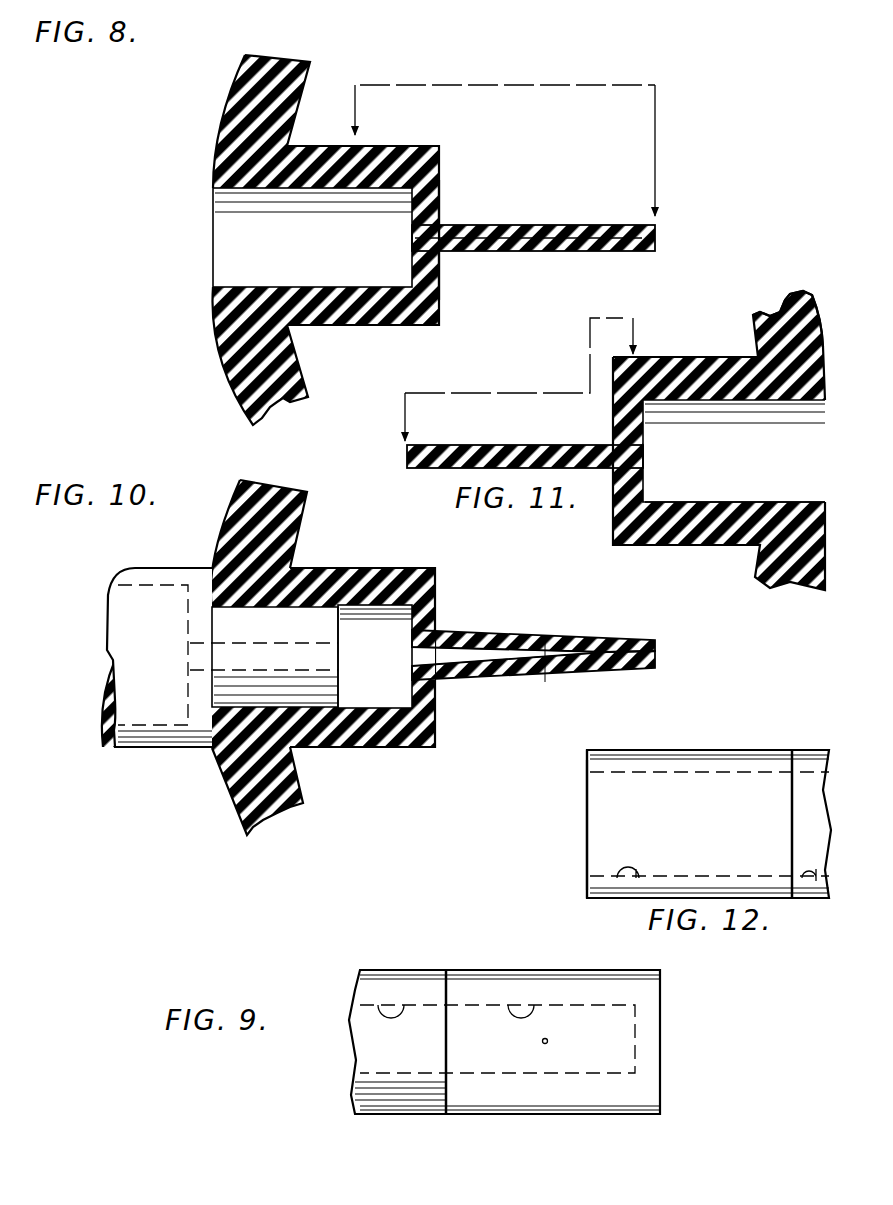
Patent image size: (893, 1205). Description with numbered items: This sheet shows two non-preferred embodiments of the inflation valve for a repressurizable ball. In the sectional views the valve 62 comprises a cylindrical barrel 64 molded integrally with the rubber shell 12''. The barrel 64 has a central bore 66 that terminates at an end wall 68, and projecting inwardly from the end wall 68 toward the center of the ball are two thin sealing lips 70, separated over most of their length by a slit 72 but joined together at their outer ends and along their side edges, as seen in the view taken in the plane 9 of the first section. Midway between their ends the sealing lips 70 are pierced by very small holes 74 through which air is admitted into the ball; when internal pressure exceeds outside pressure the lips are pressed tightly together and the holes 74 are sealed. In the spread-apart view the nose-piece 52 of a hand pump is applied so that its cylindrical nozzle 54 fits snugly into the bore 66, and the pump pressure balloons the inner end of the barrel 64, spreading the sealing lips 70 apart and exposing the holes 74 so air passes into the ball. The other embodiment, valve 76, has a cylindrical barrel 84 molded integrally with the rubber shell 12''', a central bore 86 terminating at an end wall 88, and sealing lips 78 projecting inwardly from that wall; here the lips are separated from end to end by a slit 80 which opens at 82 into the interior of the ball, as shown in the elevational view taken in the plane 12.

In FIG. 8, the plane 9— 9 is at (499, 150).
In FIG. 8, the plane 12— 12 is at (519, 379).
In FIG. 8, the rubber shell 12'' is at (226, 240).
In FIG. 10, the rubber shell 12'' is at (238, 657).
In FIG. 11, the rubber shell 12''' is at (788, 297).
In FIG. 10, the nose-piece 52 is at (172, 568).
In FIG. 10, the cylindrical nozzle 54 is at (318, 628).
In FIG. 8, the inflation valve 62 is at (452, 147).
In FIG. 10, the inflation valve 62 is at (448, 584).
In FIG. 9, the inflation valve 62 is at (447, 945).
In FIG. 8, the cylindrical barrel 64 is at (355, 318).
In FIG. 10, the cylindrical barrel 64 is at (347, 737).
In FIG. 9, the cylindrical barrel 64 is at (392, 1097).
In FIG. 8, the central bore 66 is at (316, 287).
In FIG. 10, the central bore 66 is at (408, 702).
In FIG. 9, the central bore 66 is at (403, 1000).
In FIG. 8, the end wall 68 is at (441, 284).
In FIG. 8, the sealing lips 70 is at (598, 227).
In FIG. 10, the sealing lips 70 is at (500, 633).
In FIG. 9, the sealing lips 70 is at (556, 1095).
In FIG. 8, the slit 72 is at (410, 238).
In FIG. 10, the slit 72 is at (462, 662).
In FIG. 9, the slit 72 is at (533, 1000).
In FIG. 8, the holes 74 is at (545, 223).
In FIG. 10, the holes 74 is at (546, 634).
In FIG. 9, the holes 74 is at (538, 1041).
In FIG. 11, the inflation valve 76 is at (703, 338).
In FIG. 12, the inflation valve 76 is at (728, 742).
In FIG. 11, the sealing lips 78 is at (498, 449).
In FIG. 12, the sealing lips 78 is at (645, 795).
In FIG. 11, the slit 80 is at (648, 455).
In FIG. 12, the slit 80 is at (615, 879).
In FIG. 11, the slit opening 82 is at (405, 457).
In FIG. 12, the slit opening 82 is at (585, 818).
In FIG. 11, the cylindrical barrel 84 is at (707, 530).
In FIG. 12, the cylindrical barrel 84 is at (808, 795).
In FIG. 11, the central bore 86 is at (766, 502).
In FIG. 12, the central bore 86 is at (808, 881).
In FIG. 11, the end wall 88 is at (632, 488).